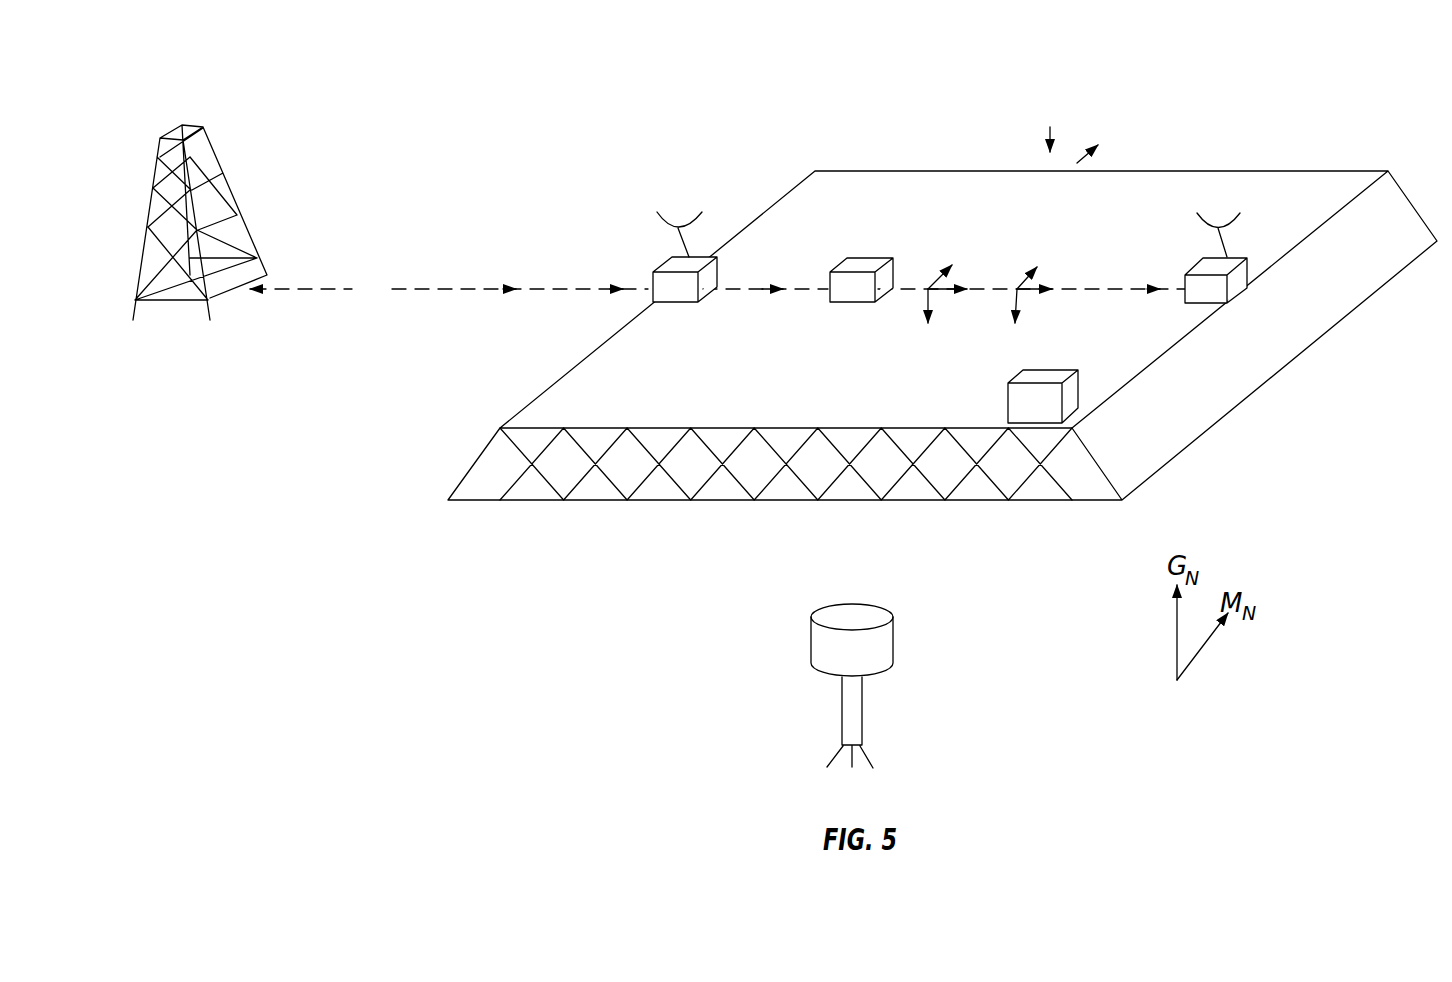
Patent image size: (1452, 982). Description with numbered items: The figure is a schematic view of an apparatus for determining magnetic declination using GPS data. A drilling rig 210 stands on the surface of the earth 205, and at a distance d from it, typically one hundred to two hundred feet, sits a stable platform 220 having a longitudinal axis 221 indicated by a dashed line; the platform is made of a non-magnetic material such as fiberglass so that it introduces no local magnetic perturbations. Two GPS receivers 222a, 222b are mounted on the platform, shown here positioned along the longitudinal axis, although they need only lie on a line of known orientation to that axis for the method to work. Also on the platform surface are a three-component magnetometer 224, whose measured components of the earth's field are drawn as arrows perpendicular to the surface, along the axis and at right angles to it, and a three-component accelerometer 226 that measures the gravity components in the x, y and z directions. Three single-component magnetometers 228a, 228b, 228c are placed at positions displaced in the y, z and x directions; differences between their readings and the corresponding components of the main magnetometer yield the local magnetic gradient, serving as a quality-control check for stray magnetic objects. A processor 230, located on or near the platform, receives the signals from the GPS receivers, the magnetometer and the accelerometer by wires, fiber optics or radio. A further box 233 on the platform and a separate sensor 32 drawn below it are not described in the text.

The drilling rig 210 is at (193, 126).
The surface of the earth 205 is at (530, 93).
The stable platform 220 is at (1215, 170).
The longitudinal axis 221 is at (1088, 288).
The GPS receiver 222a is at (667, 293).
The GPS receiver 222b is at (1200, 297).
The 3-component magnetometer 224 is at (932, 297).
The 3-component accelerometer 226 is at (1020, 297).
The single component magnetometer 228a is at (762, 289).
The single component magnetometer 228b is at (1052, 127).
The single component magnetometer 228c is at (1095, 143).
The processor 230 is at (1017, 403).
The sensor package 233 is at (847, 297).
The survey tool / sensor 32 is at (893, 648).